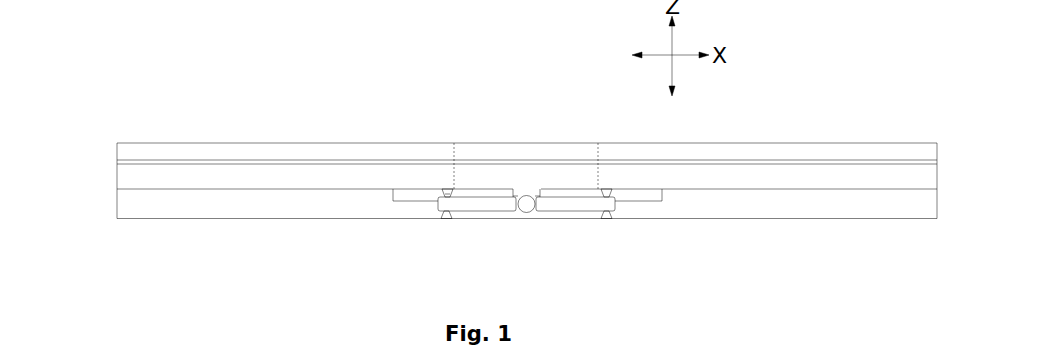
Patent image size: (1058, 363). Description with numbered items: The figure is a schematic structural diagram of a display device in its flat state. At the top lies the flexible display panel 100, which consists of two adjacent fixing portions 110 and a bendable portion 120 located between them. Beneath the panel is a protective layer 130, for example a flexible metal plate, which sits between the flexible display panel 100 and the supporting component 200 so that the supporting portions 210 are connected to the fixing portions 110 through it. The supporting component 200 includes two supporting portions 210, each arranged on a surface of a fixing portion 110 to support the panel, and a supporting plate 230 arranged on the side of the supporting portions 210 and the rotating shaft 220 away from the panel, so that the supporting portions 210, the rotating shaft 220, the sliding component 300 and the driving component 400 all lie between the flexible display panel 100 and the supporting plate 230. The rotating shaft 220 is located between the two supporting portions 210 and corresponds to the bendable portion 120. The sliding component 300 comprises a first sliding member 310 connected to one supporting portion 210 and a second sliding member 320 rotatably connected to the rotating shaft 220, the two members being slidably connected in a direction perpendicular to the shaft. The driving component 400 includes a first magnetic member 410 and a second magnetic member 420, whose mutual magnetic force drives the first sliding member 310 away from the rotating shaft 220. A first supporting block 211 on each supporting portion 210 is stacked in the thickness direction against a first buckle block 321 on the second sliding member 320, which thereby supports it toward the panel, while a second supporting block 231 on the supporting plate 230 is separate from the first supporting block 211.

The flexible display panel 100 is at (117, 155).
The fixing portion 110 is at (265, 152).
The bendable portion 120 is at (567, 152).
The protective layer 130 is at (882, 162).
The supporting component 200 is at (117, 180).
The supporting portion 210 is at (383, 168).
The first supporting block 211 is at (446, 189).
The rotating shaft 220 is at (525, 196).
The supporting plate 230 is at (358, 218).
The second supporting block 231 is at (444, 212).
The sliding component 300 is at (687, 244).
The first sliding member 310 is at (636, 198).
The second sliding member 320 is at (578, 206).
The first buckle block 321 is at (452, 192).
The driving component 400 is at (524, 244).
The first magnetic member 410 is at (540, 197).
The second magnetic member 420 is at (526, 204).